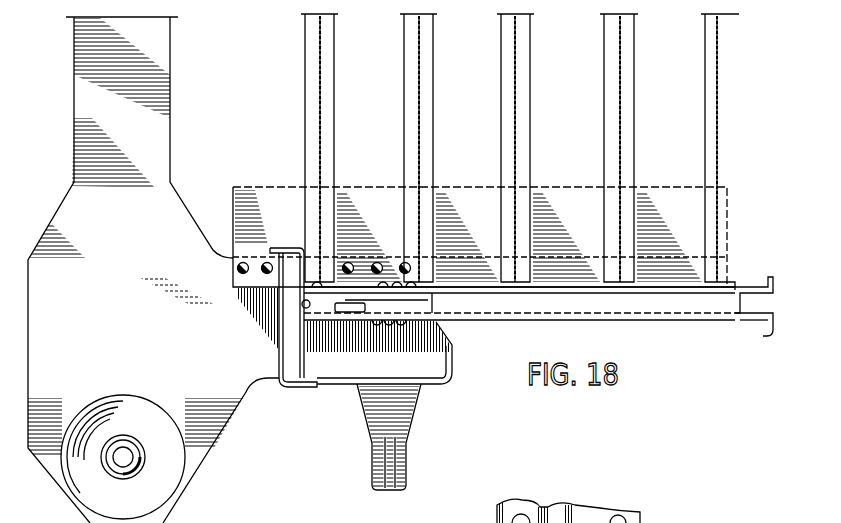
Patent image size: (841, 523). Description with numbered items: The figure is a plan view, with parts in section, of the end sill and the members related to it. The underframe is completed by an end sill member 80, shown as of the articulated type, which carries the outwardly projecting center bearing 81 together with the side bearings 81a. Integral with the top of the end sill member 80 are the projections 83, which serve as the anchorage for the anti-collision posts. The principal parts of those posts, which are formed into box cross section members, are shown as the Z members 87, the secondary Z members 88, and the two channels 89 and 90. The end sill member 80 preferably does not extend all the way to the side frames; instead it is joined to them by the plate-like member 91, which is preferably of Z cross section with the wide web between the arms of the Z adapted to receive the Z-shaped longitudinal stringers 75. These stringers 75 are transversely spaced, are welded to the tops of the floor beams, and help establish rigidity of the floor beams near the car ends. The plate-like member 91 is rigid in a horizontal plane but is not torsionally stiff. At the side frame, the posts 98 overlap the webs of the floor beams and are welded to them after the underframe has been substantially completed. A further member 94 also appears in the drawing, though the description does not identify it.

The longitudinal stringer 75 is at (333, 124).
The end sill member 80 is at (242, 392).
The center bearing 81 is at (158, 492).
The side bearing 81a is at (408, 458).
The projection 83 is at (288, 331).
The Z member 87 is at (296, 372).
The secondary Z member 88 is at (292, 246).
The channel 89 is at (303, 358).
The channel 90 is at (300, 307).
The plate-like member 91 is at (478, 178).
The lower member 94 is at (497, 514).
The post 98 is at (757, 320).